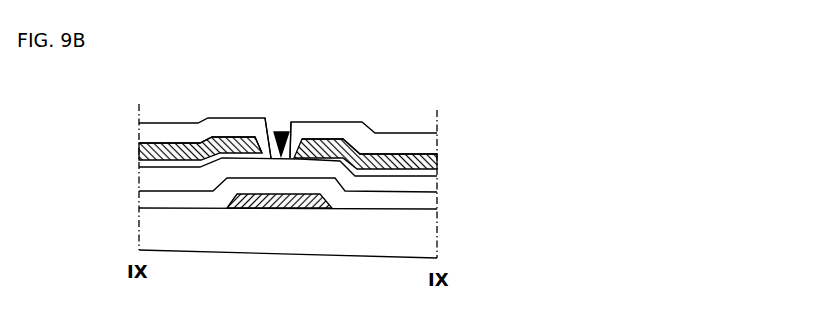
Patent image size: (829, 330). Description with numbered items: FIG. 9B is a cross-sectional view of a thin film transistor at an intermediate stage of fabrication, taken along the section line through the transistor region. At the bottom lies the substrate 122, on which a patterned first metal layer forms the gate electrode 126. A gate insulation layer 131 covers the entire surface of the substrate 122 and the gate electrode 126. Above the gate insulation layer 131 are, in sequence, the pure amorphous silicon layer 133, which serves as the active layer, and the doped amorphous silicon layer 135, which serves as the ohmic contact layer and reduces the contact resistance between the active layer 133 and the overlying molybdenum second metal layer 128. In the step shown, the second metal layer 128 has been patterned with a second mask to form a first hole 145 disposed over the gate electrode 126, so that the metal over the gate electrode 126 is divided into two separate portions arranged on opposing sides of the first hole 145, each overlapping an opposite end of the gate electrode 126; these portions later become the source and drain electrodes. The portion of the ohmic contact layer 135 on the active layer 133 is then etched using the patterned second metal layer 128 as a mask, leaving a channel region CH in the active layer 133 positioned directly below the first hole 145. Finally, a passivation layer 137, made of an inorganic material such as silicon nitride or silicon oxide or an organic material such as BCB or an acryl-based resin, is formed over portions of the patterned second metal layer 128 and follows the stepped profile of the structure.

The substrate 122 is at (293, 244).
The gate electrode 126 is at (246, 200).
The gate insulation layer 131 is at (425, 205).
The pure amorphous silicon layer (active layer) 133 is at (425, 183).
The second metal layer 128 is at (227, 140).
The doped amorphous silicon layer (ohmic contact layer) 135 is at (139, 165).
The passivation layer 137 is at (340, 128).
The channel region CH is at (267, 118).
The first hole 145 is at (283, 131).